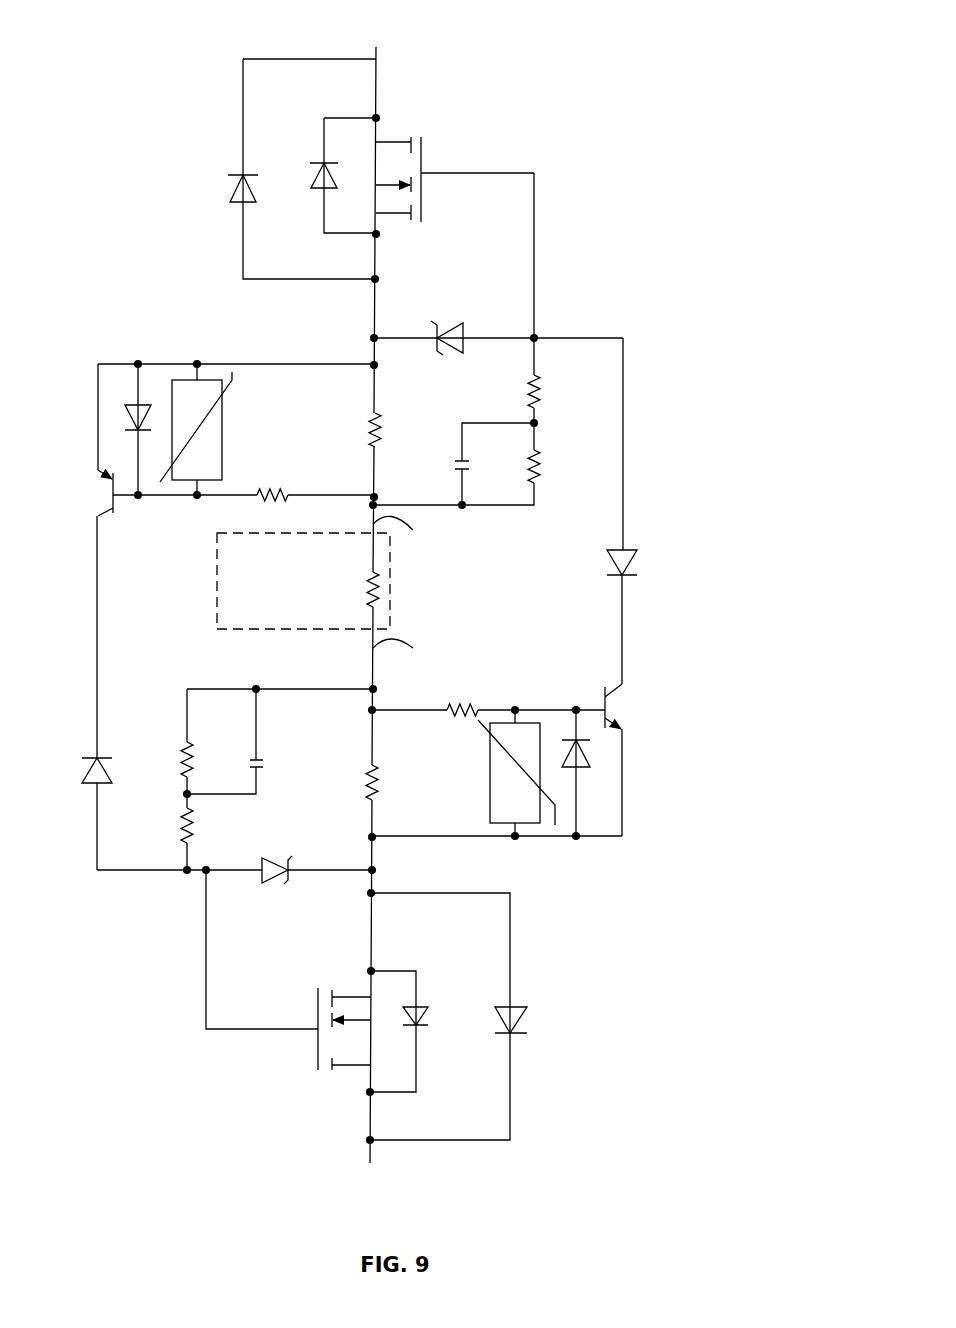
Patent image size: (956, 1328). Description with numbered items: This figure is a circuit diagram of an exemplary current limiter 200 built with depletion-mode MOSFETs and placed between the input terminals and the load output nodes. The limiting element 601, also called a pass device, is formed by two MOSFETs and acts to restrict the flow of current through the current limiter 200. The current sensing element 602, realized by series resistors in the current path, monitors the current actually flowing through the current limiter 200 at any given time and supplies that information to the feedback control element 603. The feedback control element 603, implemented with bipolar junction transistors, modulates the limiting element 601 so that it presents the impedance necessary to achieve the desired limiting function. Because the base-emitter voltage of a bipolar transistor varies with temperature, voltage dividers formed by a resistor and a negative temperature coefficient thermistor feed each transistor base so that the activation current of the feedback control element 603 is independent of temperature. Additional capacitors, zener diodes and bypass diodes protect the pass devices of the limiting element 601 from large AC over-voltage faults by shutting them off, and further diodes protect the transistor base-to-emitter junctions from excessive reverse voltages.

The current limiter 200 is at (376, 605).
The limiting element 601 is at (428, 118).
The current sensing element 602 is at (388, 429).
The feedback control element 603 is at (88, 508).